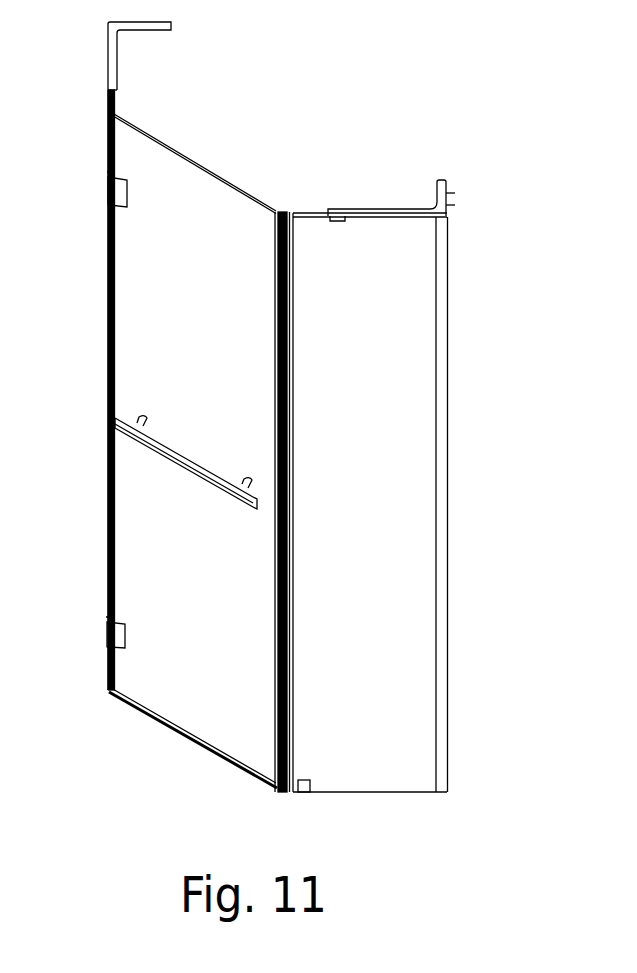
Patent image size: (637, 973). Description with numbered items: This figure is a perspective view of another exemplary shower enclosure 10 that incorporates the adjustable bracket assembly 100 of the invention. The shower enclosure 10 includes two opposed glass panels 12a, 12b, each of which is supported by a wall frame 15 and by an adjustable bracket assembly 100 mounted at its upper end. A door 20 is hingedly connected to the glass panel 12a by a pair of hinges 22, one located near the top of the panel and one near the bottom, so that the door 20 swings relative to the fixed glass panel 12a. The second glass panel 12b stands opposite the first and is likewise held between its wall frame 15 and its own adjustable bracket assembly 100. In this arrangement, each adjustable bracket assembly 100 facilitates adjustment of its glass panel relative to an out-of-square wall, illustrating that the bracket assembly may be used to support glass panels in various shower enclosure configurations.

The shower enclosure 10 is at (337, 130).
The glass panel 12a is at (117, 103).
The glass panel 12b is at (388, 780).
The wall frame 15 is at (448, 628).
The door 20 is at (192, 180).
The hinges 22 is at (112, 191).
The adjustable bracket assembly 100 is at (140, 43).